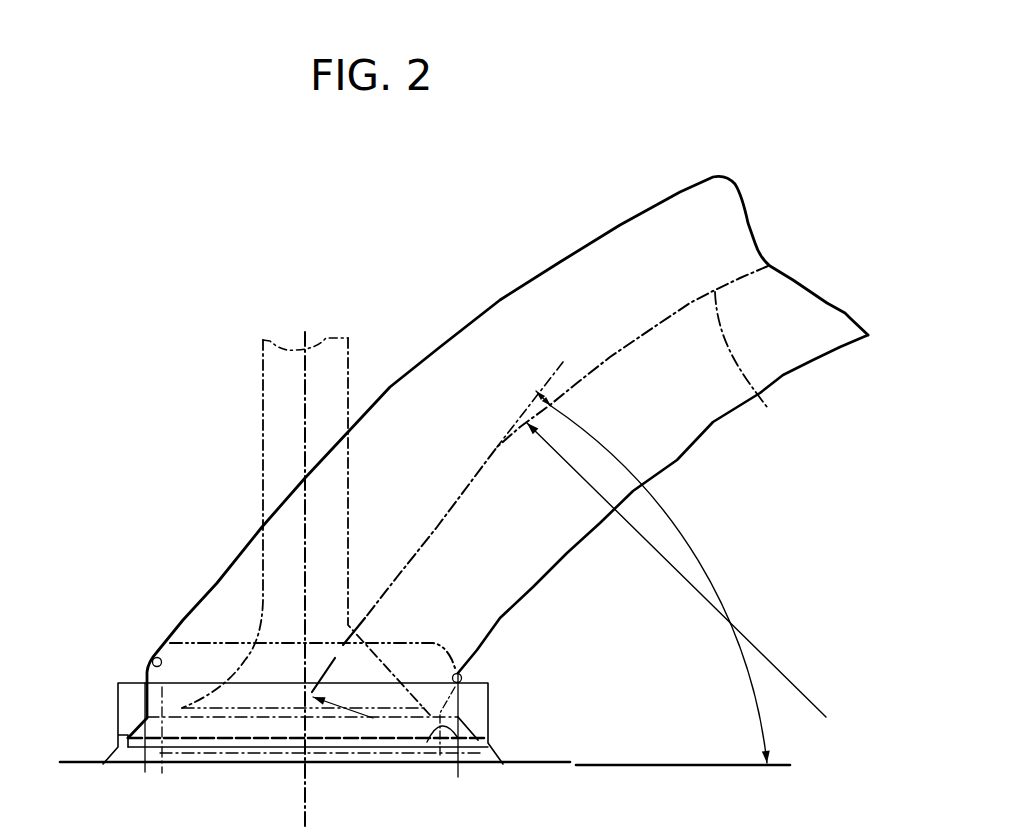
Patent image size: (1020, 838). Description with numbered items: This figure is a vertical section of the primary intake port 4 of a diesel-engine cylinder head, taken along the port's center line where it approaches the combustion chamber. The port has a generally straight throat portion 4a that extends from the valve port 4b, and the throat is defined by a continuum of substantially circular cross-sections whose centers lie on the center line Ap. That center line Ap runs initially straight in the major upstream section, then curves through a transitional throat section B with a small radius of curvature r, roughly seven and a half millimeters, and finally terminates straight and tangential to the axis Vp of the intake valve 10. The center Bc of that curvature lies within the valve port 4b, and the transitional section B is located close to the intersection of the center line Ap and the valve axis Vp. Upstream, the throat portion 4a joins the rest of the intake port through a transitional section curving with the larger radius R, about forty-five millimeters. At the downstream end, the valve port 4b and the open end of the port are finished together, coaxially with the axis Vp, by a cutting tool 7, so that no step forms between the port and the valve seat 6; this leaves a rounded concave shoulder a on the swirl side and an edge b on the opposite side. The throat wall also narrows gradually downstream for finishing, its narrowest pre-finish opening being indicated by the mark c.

The primary intake port 4 is at (239, 588).
The throat portion 4a is at (392, 388).
The valve port 4b is at (215, 755).
The valve seat 6 is at (477, 717).
The cutting tool 7 is at (190, 643).
The intake valve 10 is at (263, 387).
The rounded concave shoulder a is at (150, 665).
The edge b is at (462, 673).
The mark indicating narrowest opening c is at (437, 728).
The radius of curvature r is at (338, 699).
The transitional throat section B is at (312, 692).
The center of curvature Bc is at (372, 716).
The axis of intake valve Vp is at (302, 768).
The center line Ap is at (759, 368).
The radius of curvature of transitional intake port section R is at (768, 663).